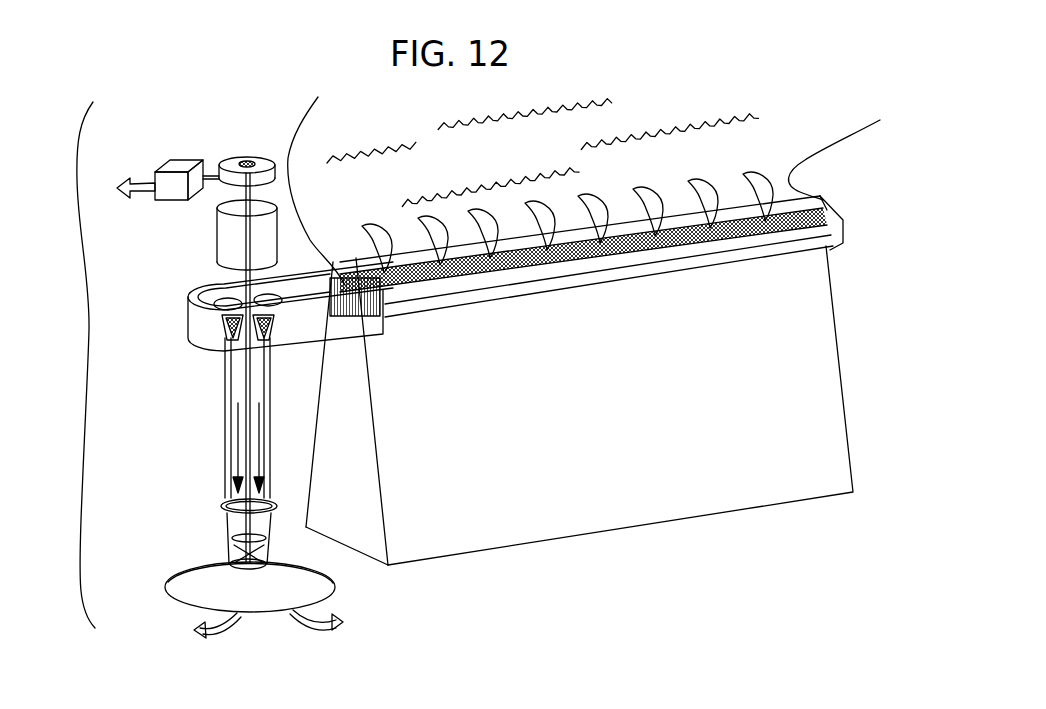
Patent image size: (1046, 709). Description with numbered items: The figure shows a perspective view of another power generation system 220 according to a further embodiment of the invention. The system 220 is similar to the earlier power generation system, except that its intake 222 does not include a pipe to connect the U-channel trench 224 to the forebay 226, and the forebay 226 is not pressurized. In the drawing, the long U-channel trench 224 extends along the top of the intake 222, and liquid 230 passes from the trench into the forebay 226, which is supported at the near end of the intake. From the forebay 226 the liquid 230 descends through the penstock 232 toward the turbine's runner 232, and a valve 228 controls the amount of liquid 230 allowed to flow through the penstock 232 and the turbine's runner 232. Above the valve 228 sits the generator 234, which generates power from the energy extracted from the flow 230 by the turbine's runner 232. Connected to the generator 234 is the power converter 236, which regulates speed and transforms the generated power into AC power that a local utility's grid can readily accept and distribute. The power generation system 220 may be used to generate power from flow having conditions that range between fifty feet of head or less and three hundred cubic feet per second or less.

The power generation system 220 is at (89, 349).
The intake 222 is at (382, 342).
The U-channel trench 224 is at (724, 258).
The forebay 226 is at (290, 348).
The valve 228 is at (212, 232).
The liquid 230 is at (214, 282).
The penstock 232 is at (222, 374).
The generator 234 is at (245, 158).
The power converter 236 is at (172, 162).